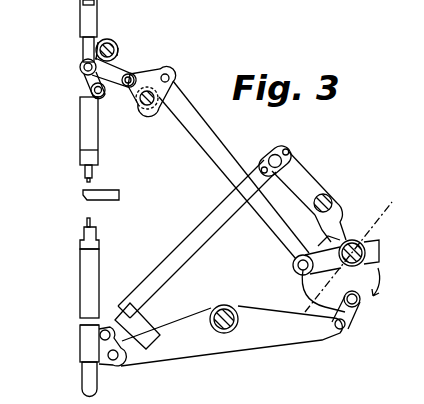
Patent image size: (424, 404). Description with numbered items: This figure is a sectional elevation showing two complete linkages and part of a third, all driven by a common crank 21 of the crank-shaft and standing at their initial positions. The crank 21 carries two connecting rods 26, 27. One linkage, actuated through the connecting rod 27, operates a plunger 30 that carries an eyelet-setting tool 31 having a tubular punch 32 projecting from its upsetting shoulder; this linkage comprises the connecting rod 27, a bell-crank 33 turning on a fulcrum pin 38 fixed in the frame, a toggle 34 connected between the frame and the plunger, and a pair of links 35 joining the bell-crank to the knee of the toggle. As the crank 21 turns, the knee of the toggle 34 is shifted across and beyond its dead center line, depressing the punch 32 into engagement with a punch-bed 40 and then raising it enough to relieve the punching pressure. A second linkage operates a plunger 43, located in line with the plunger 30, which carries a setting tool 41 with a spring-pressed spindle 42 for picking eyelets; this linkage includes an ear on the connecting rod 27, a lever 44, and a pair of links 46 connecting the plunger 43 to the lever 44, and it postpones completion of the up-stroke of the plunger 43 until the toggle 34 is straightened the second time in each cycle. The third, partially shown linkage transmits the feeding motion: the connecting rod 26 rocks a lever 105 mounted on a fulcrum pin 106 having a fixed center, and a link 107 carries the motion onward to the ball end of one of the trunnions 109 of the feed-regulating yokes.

The crank 21 is at (352, 240).
The connecting rod 26 is at (299, 258).
The connecting rod 27 is at (218, 132).
The plunger 30 is at (82, 122).
The eyelet-setting tool 31 is at (92, 175).
The tubular punch 32 is at (86, 180).
The bell-crank 33 is at (152, 76).
The toggle 34 is at (80, 66).
The links 35 is at (117, 73).
The fulcrum pin 38 is at (148, 104).
The punch-bed 40 is at (83, 193).
The setting tool 41 is at (80, 245).
The spring-pressed spindle 42 is at (91, 222).
The plunger 43 is at (82, 372).
The lever 44 is at (275, 337).
The links 46 is at (80, 343).
The lever 105 is at (299, 167).
The fulcrum pin 106 is at (330, 196).
The link 107 is at (188, 238).
The trunnions 109 is at (140, 328).